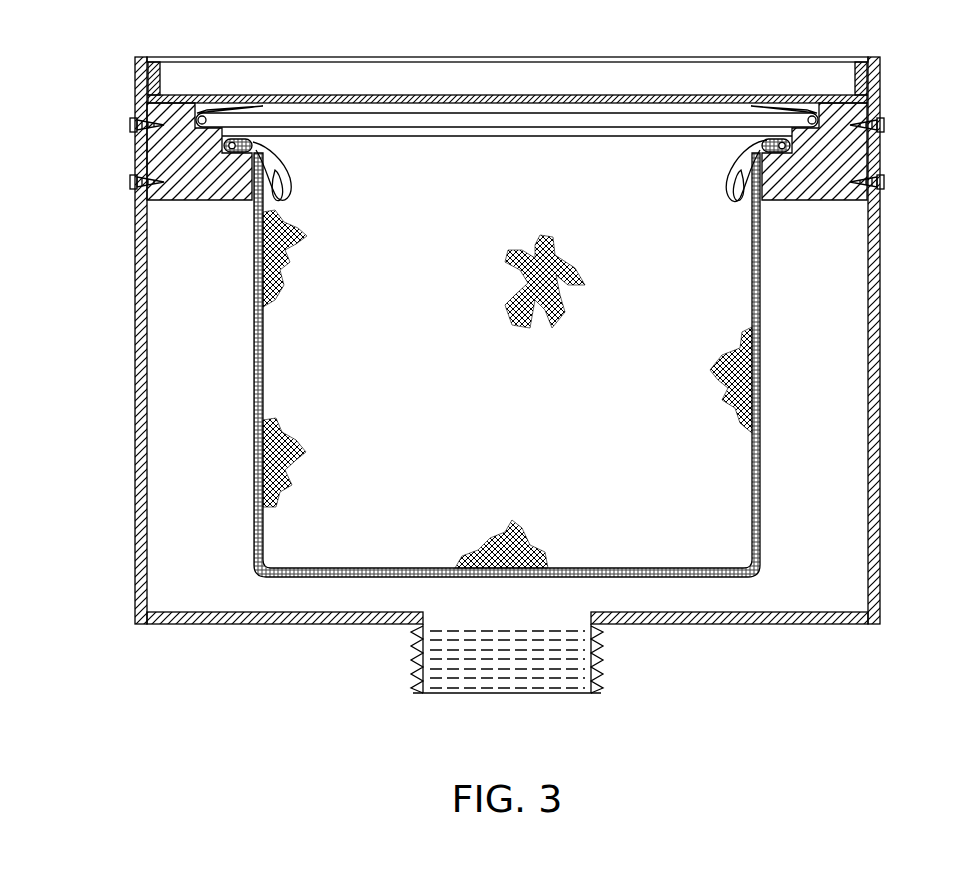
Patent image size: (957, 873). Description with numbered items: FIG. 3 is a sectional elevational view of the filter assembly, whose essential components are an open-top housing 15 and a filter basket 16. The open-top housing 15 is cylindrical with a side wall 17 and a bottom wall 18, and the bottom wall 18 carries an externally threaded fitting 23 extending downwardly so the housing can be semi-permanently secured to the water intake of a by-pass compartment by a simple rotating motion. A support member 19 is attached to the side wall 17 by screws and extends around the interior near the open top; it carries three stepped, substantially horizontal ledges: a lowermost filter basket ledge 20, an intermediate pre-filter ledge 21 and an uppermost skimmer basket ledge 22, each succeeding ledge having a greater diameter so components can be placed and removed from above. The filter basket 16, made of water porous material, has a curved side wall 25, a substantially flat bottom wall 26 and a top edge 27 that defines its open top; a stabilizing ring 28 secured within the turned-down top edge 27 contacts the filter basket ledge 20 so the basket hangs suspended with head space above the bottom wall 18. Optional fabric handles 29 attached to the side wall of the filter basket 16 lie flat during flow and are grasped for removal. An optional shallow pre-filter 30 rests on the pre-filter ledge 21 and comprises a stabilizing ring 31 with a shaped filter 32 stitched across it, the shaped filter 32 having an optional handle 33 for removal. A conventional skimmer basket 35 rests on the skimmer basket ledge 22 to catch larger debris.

The open-top housing 15 is at (133, 363).
The filter basket 16 is at (256, 391).
The side wall 17 is at (135, 476).
The bottom wall 18 is at (217, 617).
The support member 19 is at (135, 160).
The filter basket ledge 20 is at (830, 160).
The pre-filter ledge 21 is at (873, 142).
The skimmer basket ledge 22 is at (872, 112).
The externally threaded fitting 23 is at (573, 695).
The curved side wall 25 is at (750, 298).
The bottom wall 26 is at (707, 567).
The top edge 27 is at (773, 137).
The stabilizing ring 28 is at (792, 152).
The handles 29 is at (293, 182).
The pre-filter 30 is at (697, 108).
The stabilizing ring 31 is at (812, 114).
The shaped filter 32 is at (637, 117).
The handle 33 is at (218, 95).
The skimmer basket 35 is at (477, 94).